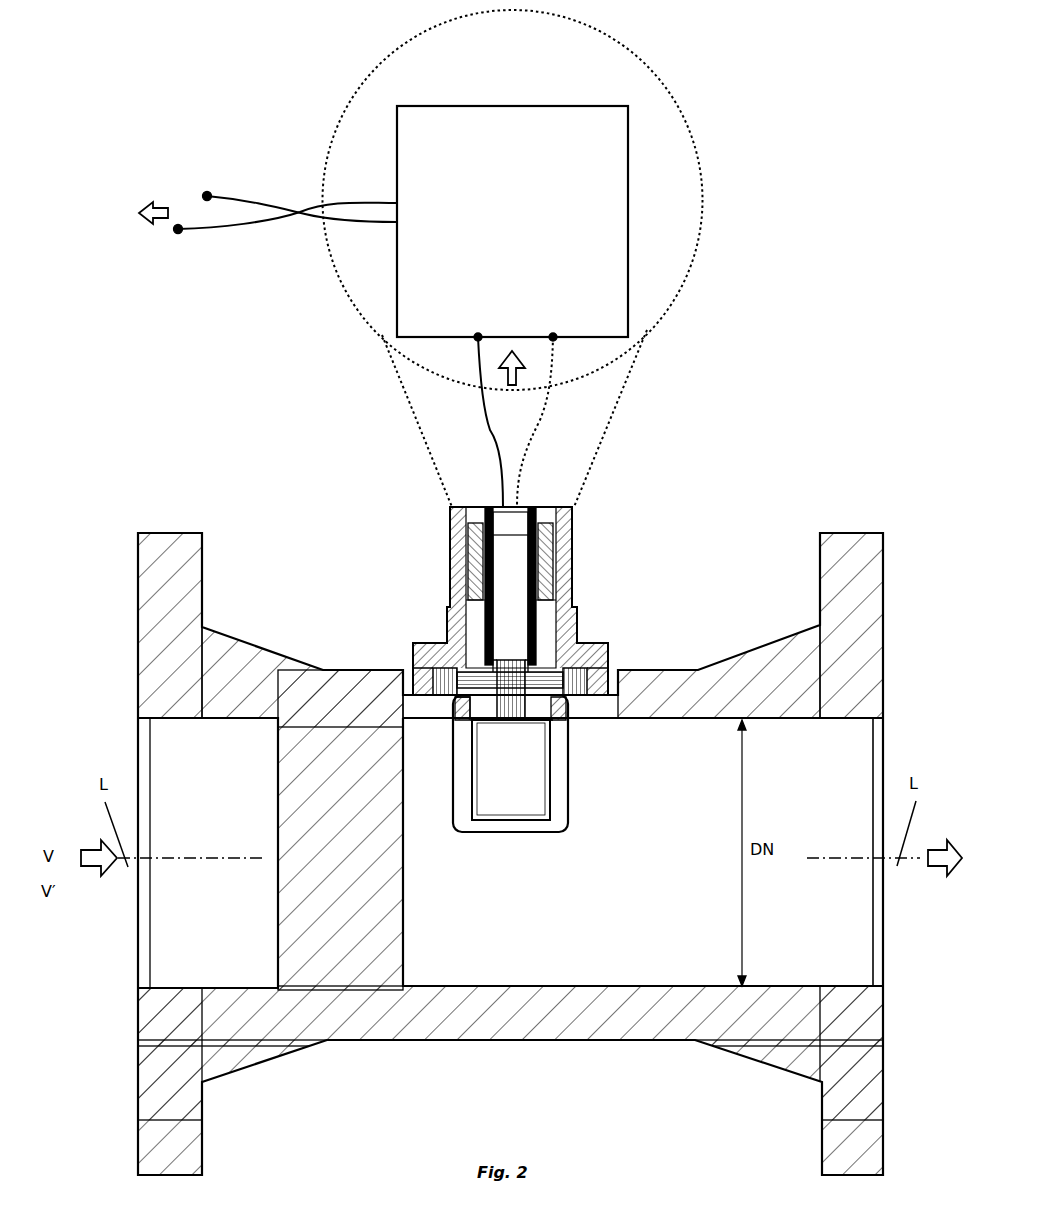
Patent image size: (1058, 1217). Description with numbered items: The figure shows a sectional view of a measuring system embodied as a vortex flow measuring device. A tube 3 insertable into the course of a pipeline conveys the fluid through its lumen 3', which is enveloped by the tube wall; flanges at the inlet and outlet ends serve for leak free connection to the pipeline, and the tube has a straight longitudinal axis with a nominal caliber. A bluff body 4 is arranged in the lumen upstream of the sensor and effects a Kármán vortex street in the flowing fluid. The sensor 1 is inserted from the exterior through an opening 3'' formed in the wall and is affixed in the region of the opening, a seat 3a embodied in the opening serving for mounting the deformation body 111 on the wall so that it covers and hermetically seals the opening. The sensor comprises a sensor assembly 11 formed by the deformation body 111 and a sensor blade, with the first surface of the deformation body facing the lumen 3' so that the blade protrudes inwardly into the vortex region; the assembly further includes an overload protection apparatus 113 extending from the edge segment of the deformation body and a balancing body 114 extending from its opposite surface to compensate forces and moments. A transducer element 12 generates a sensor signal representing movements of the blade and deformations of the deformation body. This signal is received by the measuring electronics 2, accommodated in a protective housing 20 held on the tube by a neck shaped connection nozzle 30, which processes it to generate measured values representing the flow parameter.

The sensor 1 is at (386, 524).
The measuring electronics 2 is at (522, 223).
The tube 3 is at (510, 845).
The lumen 3' is at (638, 852).
The opening 3'' is at (445, 745).
The seat 3a is at (427, 665).
The bluff body 4 is at (348, 853).
The sensor assembly 11 is at (523, 760).
The transducer element 12 is at (527, 510).
The protective housing 20 is at (683, 256).
The connection nozzle 30 is at (532, 631).
The deformation body 111 is at (487, 690).
The overload protection apparatus 113 is at (530, 790).
The balancing body 114 is at (512, 563).